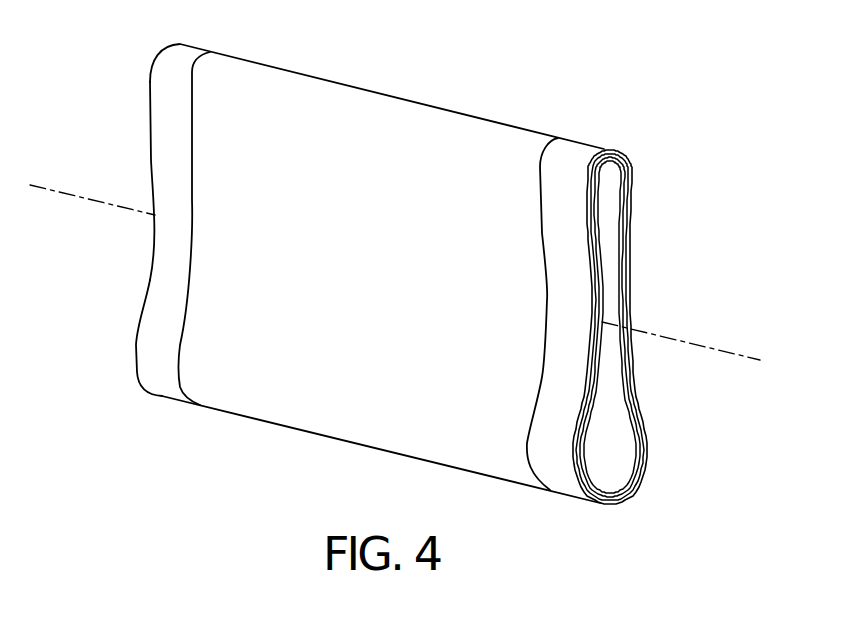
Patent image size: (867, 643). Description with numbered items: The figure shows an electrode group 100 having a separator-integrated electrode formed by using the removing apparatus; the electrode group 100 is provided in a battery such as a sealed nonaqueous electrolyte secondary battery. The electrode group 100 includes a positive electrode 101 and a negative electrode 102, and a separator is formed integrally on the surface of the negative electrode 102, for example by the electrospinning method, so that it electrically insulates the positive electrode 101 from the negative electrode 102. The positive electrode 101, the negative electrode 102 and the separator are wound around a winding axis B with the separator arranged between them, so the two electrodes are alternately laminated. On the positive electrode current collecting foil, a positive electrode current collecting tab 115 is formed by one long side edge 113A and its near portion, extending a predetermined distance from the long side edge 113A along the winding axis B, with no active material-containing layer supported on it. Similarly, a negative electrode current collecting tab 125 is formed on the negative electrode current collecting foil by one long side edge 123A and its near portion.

The electrode group 100 is at (398, 274).
The positive electrode 101 is at (567, 246).
The negative electrode 102 is at (176, 181).
The positive electrode current collecting tab 115 is at (577, 300).
The long side edge 113A is at (640, 419).
The long side edge 123A is at (137, 336).
The negative electrode current collecting tab 125 is at (160, 232).
The winding axis B is at (740, 352).